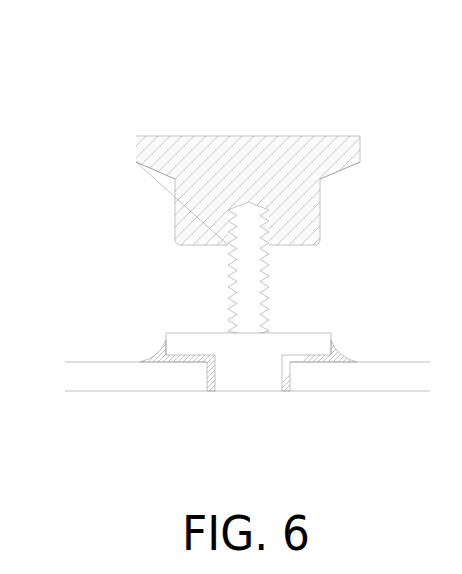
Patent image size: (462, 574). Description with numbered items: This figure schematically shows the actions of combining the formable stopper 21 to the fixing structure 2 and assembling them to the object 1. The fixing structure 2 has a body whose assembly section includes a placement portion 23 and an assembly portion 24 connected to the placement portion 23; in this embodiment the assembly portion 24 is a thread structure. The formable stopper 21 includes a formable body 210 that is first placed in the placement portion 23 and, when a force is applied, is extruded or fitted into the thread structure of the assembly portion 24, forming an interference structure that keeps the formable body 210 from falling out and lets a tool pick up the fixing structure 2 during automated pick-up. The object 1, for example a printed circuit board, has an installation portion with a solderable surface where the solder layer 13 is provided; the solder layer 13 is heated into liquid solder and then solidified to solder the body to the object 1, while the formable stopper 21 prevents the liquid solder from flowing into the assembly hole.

The fixing structure 2 is at (192, 103).
The formable stopper 21 is at (357, 126).
The formable body 210 is at (152, 152).
The placement portion 23 is at (248, 285).
The assembly portion 24 is at (214, 282).
The solder layer 13 is at (342, 355).
The object 1 is at (365, 385).